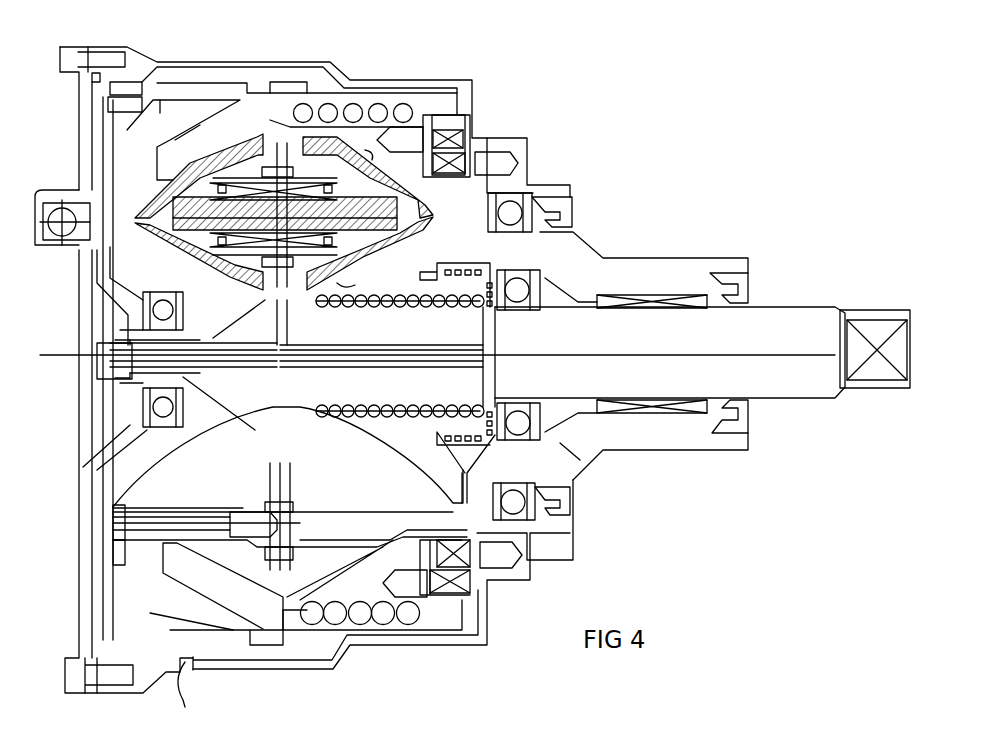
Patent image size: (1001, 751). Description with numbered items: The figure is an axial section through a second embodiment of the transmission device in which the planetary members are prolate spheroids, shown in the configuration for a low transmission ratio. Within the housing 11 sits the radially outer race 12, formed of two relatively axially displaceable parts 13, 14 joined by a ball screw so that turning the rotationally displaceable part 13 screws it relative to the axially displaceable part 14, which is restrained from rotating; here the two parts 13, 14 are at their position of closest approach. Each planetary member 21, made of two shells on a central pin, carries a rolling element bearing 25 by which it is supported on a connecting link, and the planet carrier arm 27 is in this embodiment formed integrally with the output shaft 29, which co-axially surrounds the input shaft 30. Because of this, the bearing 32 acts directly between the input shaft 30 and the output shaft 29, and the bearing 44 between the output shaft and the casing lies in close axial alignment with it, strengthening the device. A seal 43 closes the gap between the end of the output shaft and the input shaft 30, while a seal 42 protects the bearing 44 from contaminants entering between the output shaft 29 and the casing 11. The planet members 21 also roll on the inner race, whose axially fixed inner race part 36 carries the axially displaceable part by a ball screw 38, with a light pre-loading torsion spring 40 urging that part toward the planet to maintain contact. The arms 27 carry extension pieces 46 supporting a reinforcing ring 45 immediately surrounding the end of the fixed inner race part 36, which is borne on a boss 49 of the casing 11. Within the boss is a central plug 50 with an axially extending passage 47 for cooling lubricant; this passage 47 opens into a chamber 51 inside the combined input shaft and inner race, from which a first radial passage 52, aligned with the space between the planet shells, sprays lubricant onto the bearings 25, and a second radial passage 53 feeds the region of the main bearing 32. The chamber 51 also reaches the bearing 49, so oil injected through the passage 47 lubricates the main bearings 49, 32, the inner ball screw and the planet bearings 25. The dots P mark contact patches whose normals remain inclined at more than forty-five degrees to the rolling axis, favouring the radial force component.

The housing 11 is at (477, 88).
The radially outer race 12 is at (201, 113).
The rotationally displaceable outer race part 13 is at (195, 147).
The axially displaceable outer race part 14 is at (343, 132).
The planetary member 21 is at (150, 207).
The rolling element bearing 25 is at (300, 167).
The planet carrier arm 27 is at (357, 527).
The output shaft 29 is at (673, 433).
The input shaft 30 is at (795, 373).
The bearing 32 is at (515, 420).
The axially fixed inner race part 36 is at (117, 250).
The ball screw 38 is at (392, 413).
The pre-loading torsion spring 40 is at (460, 267).
The seal 42 is at (568, 202).
The seal 43 is at (750, 282).
The bearing 44 is at (517, 505).
The reinforcing ring 45 is at (150, 207).
The extension pieces 46 is at (197, 513).
The axially extending passage 47 is at (97, 383).
The boss 49 is at (173, 337).
The central plug 50 is at (125, 348).
The chamber 51 is at (330, 340).
The radial passage 52 is at (285, 320).
The radial passage 53 is at (495, 378).